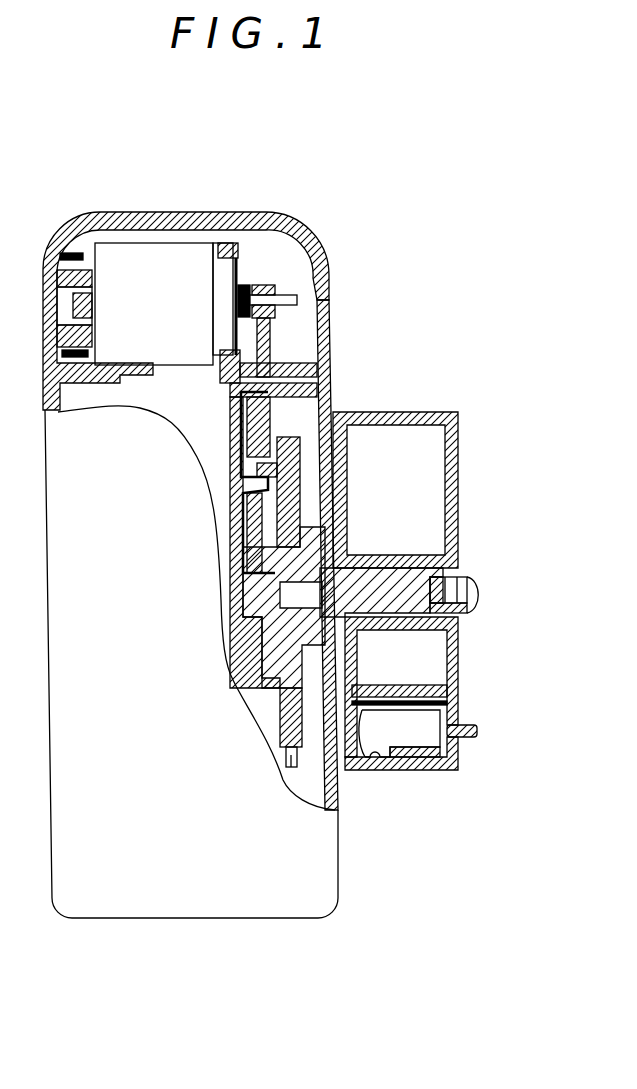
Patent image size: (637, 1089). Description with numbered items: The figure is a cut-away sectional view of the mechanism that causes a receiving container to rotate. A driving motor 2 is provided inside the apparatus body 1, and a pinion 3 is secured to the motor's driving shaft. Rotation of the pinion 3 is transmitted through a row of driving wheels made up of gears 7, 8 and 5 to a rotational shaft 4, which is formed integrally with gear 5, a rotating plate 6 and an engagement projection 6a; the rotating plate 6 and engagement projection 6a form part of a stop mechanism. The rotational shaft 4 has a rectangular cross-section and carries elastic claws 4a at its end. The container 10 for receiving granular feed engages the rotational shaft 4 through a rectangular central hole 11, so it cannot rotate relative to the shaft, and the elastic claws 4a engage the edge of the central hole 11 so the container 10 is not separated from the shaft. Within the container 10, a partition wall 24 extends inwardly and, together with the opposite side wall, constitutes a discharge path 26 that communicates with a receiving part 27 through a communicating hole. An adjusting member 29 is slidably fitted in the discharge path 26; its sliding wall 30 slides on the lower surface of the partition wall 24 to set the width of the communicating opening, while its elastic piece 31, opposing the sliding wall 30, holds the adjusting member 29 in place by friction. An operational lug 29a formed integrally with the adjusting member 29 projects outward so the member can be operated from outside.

The apparatus body 1 is at (176, 129).
The driving motor 2 is at (163, 262).
The pinion 3 is at (272, 292).
The gear 7 is at (263, 340).
The receiving part 27 is at (386, 443).
The container 10 is at (446, 623).
The gear 8 is at (235, 441).
The rotational shaft 4 is at (393, 577).
The elastic claws 4a is at (472, 586).
The central hole 11 is at (457, 642).
The partition wall 24 is at (457, 678).
The gear 5 is at (268, 670).
The operational lug 29a is at (478, 732).
The rotating plate 6 is at (281, 735).
The adjusting member 29 is at (460, 757).
The engagement projection 6a is at (290, 768).
The sliding wall 30 is at (360, 760).
The elastic piece 31 is at (428, 762).
The discharge path 26 is at (385, 762).